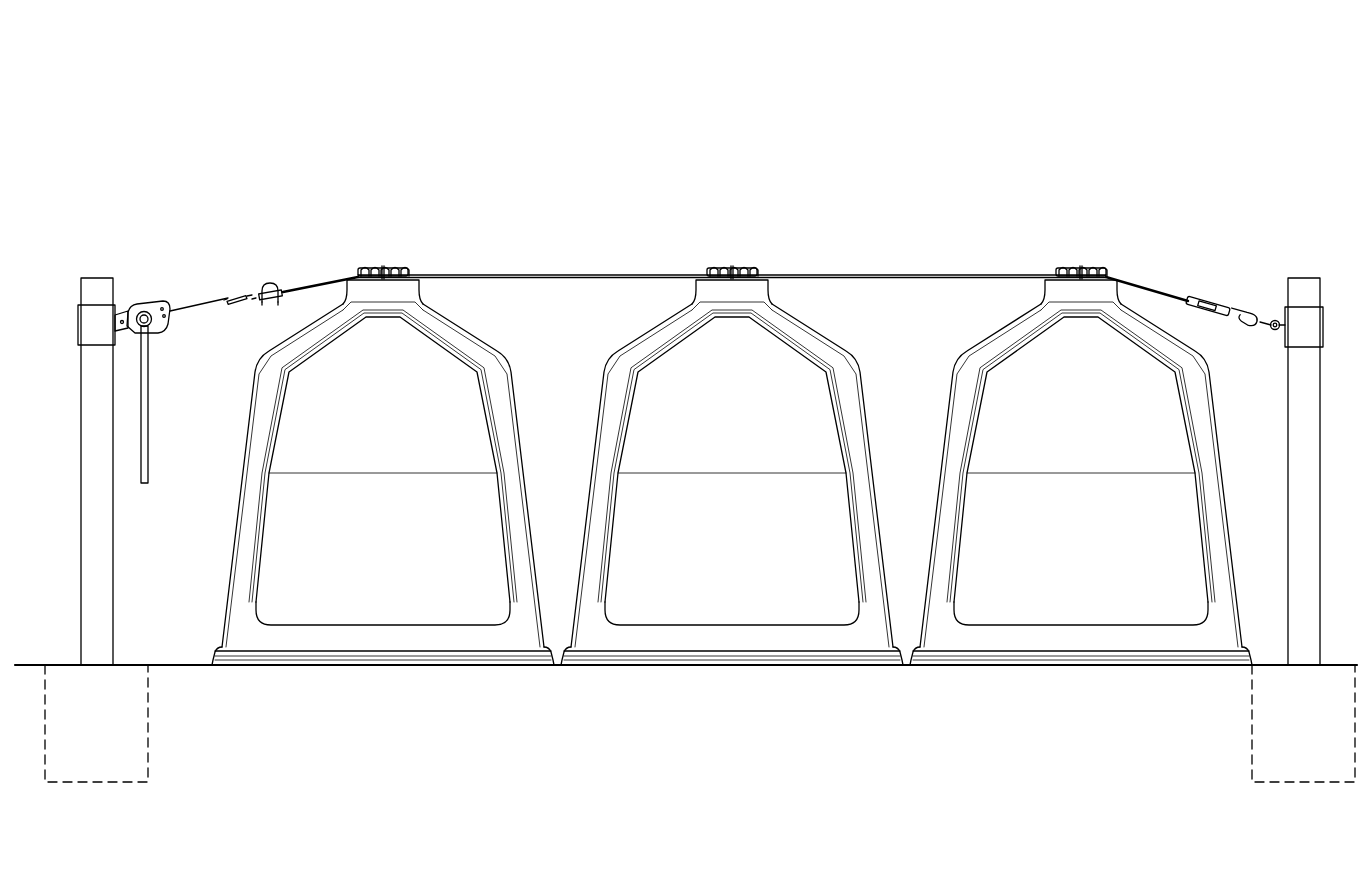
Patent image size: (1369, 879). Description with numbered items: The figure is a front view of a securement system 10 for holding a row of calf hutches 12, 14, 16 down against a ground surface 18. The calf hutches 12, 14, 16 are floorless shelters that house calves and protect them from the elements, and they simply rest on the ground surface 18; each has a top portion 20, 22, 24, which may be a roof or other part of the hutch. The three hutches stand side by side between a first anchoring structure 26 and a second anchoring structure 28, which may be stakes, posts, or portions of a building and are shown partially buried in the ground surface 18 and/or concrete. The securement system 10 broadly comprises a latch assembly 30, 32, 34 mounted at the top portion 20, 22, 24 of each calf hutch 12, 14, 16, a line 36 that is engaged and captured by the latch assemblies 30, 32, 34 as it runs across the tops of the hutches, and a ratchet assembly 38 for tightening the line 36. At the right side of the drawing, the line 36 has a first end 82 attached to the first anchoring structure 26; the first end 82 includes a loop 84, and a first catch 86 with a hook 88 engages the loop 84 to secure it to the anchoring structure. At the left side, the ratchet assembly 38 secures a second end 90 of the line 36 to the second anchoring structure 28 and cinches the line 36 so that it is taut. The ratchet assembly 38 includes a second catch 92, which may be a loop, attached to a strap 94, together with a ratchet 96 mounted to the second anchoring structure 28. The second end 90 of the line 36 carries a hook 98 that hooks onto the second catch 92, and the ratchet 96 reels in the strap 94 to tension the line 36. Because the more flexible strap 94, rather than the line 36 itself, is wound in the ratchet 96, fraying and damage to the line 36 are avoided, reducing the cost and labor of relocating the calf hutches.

The securement system 10 is at (638, 128).
The calf hutch 12 is at (389, 637).
The calf hutch 14 is at (738, 640).
The calf hutch 16 is at (1086, 640).
The ground surface 18 is at (172, 665).
The top portion 20 is at (403, 297).
The top portion 22 is at (752, 297).
The top portion 24 is at (1100, 297).
The first anchoring structure 26 is at (1316, 293).
The second anchoring structure 28 is at (84, 290).
The latch assembly 30 is at (383, 266).
The latch assembly 32 is at (732, 266).
The latch assembly 34 is at (1078, 266).
The line 36 is at (915, 275).
The ratchet assembly 38 is at (176, 228).
The first end 82 is at (1200, 274).
The loop 84 is at (1234, 309).
The first catch 86 is at (1272, 318).
The hook 88 is at (1266, 320).
The second end 90 is at (311, 250).
The second catch 92 is at (244, 295).
The strap 94 is at (207, 304).
The ratchet 96 is at (144, 302).
The hook 98 is at (266, 284).